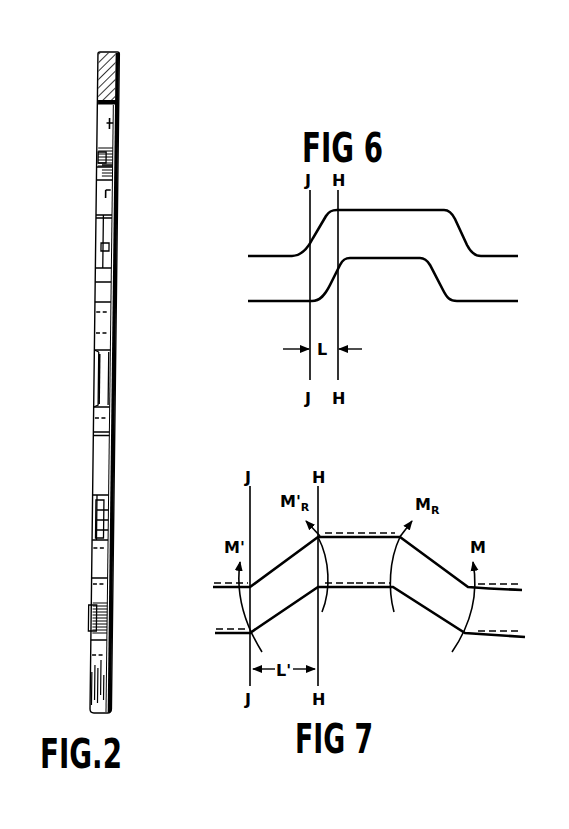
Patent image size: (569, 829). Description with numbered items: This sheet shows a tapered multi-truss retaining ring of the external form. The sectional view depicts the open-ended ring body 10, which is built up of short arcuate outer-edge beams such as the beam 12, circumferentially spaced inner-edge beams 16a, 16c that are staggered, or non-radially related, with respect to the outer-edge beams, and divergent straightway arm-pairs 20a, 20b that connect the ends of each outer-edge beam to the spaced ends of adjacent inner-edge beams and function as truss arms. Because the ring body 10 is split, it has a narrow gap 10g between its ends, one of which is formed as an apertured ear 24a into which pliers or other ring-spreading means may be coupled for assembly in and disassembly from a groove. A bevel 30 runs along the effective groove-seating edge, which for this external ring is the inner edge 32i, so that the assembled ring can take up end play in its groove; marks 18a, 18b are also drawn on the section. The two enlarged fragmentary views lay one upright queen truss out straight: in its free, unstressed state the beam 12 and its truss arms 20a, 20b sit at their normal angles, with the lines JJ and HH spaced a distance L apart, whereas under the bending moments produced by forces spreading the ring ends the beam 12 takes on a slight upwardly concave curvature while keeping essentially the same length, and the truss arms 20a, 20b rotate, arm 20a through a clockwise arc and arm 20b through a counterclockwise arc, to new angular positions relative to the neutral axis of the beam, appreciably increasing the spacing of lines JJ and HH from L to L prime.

In FIG. 2, the ring body 10 is at (121, 480).
In FIG. 2, the gap 10g is at (92, 683).
In FIG. 2, the outer-edge beam 12 is at (120, 69).
In FIG. 6, the outer-edge beam 12 is at (392, 244).
In FIG. 7, the outer-edge beam 12 is at (364, 552).
In FIG. 2, the inner-edge beam 16a is at (98, 158).
In FIG. 2, the inner-edge beam 16c is at (97, 247).
In FIG. 2, the first index mark 18a is at (118, 122).
In FIG. 2, the second index mark 18b is at (112, 191).
In FIG. 6, the truss arm 20a is at (325, 270).
In FIG. 7, the truss arm 20a is at (283, 599).
In FIG. 6, the truss arm 20b is at (454, 270).
In FIG. 7, the truss arm 20b is at (447, 603).
In FIG. 2, the apertured ear 24a is at (104, 684).
In FIG. 2, the bevel 30 is at (97, 152).
In FIG. 2, the inner edge 32i is at (108, 152).